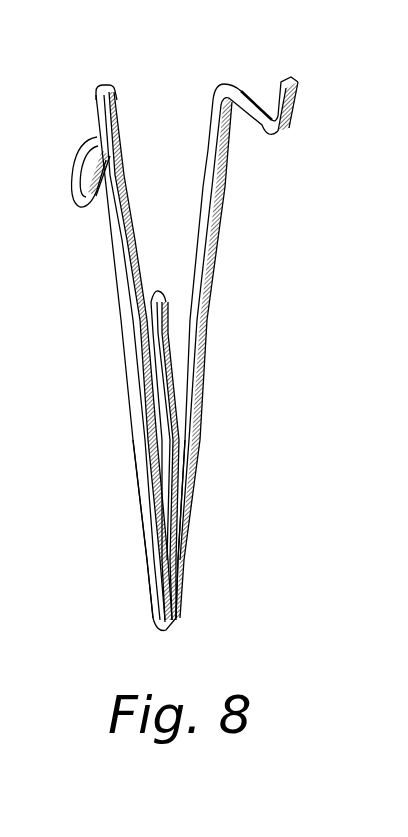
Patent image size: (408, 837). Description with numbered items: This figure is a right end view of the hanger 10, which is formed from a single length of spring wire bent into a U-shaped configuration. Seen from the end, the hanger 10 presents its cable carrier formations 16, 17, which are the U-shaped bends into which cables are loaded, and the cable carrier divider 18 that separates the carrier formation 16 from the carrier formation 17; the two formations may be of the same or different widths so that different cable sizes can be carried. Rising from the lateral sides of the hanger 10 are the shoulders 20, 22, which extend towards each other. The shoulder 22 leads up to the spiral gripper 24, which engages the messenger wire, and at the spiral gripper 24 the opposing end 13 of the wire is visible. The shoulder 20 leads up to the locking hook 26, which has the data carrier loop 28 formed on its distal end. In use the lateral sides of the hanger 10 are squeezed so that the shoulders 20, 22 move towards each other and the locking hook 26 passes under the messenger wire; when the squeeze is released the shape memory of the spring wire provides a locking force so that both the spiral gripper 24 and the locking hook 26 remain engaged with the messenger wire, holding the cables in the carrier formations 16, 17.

The hanger 10 is at (128, 431).
The opposing end 13 is at (289, 80).
The cable carrier formation 16 is at (140, 516).
The cable carrier formation 17 is at (193, 517).
The cable carrier divider 18 is at (158, 290).
The shoulder 20 is at (115, 262).
The shoulder 22 is at (217, 258).
The spiral gripper 24 is at (246, 92).
The locking hook 26 is at (117, 118).
The data carrier loop 28 is at (73, 163).